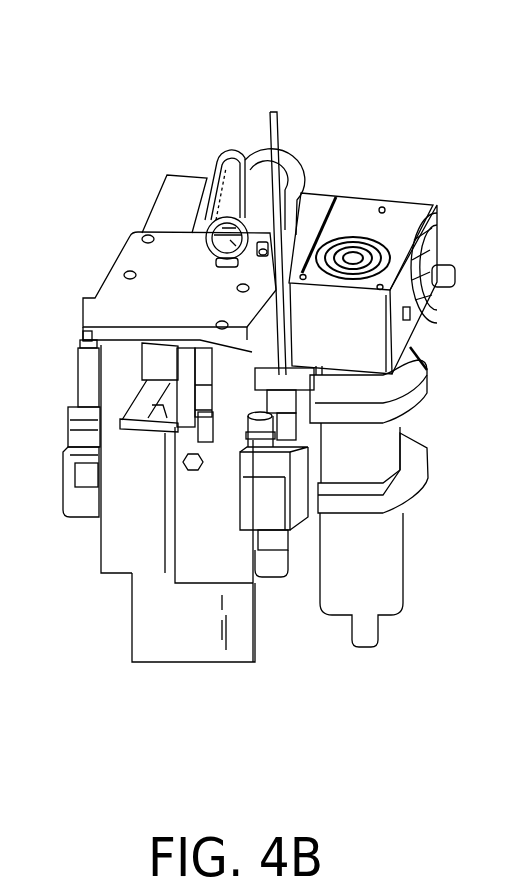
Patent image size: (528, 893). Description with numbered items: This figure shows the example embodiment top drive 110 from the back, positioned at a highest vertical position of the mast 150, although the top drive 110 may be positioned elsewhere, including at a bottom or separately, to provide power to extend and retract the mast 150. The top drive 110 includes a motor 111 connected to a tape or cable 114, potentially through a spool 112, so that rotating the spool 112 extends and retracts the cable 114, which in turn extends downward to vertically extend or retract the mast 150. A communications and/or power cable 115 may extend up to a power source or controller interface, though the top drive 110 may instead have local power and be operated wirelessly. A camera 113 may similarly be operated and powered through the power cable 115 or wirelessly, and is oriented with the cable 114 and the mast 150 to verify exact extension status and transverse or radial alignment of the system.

The top drive 110 is at (353, 197).
The motor 111 is at (422, 345).
The spool 112 is at (210, 165).
The camera 113 is at (367, 573).
The cable 114 is at (185, 373).
The power cable 115 is at (271, 110).
The mast 150 is at (163, 638).